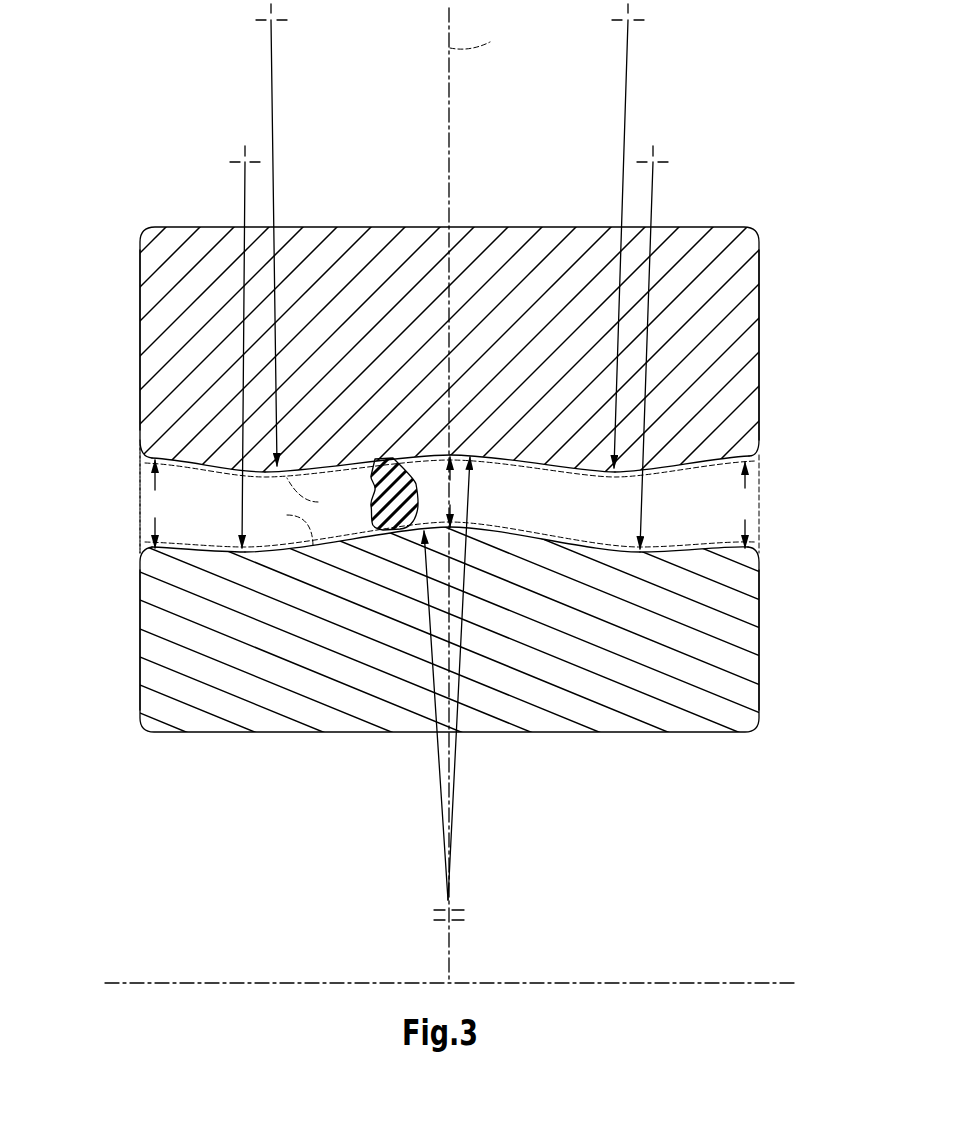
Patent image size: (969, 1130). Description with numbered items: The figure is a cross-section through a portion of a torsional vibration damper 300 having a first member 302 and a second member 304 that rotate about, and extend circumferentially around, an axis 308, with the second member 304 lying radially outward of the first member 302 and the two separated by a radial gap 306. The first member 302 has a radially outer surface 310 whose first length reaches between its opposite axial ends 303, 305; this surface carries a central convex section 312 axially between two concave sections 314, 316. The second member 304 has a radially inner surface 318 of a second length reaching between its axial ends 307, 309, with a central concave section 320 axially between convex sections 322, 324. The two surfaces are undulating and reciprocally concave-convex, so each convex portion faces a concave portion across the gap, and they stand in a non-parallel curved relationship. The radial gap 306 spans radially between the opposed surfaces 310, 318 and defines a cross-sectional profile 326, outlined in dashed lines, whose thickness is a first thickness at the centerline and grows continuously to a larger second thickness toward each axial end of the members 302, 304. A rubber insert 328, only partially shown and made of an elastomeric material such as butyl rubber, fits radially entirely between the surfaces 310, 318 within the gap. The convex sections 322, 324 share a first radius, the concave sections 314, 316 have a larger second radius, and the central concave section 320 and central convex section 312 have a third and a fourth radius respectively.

The torsional vibration damper 300 is at (142, 177).
The first member 302 is at (733, 632).
The axial end of first member 303 is at (140, 668).
The second member 304 is at (735, 347).
The axial end of first member 305 is at (760, 667).
The radial gap 306 is at (760, 487).
The axial end of second member 307 is at (140, 305).
The axis 308 is at (630, 983).
The axial end of second member 309 is at (760, 288).
The radially outer surface 310 is at (203, 560).
The central convex section 312 is at (487, 535).
The concave section 314 is at (263, 558).
The concave section 316 is at (666, 556).
The radially inner surface 318 is at (204, 460).
The central concave section 320 is at (428, 453).
The convex section 322 is at (294, 467).
The convex section 324 is at (663, 466).
The cross-sectional profile 326 is at (134, 510).
The rubber insert 328 is at (393, 497).